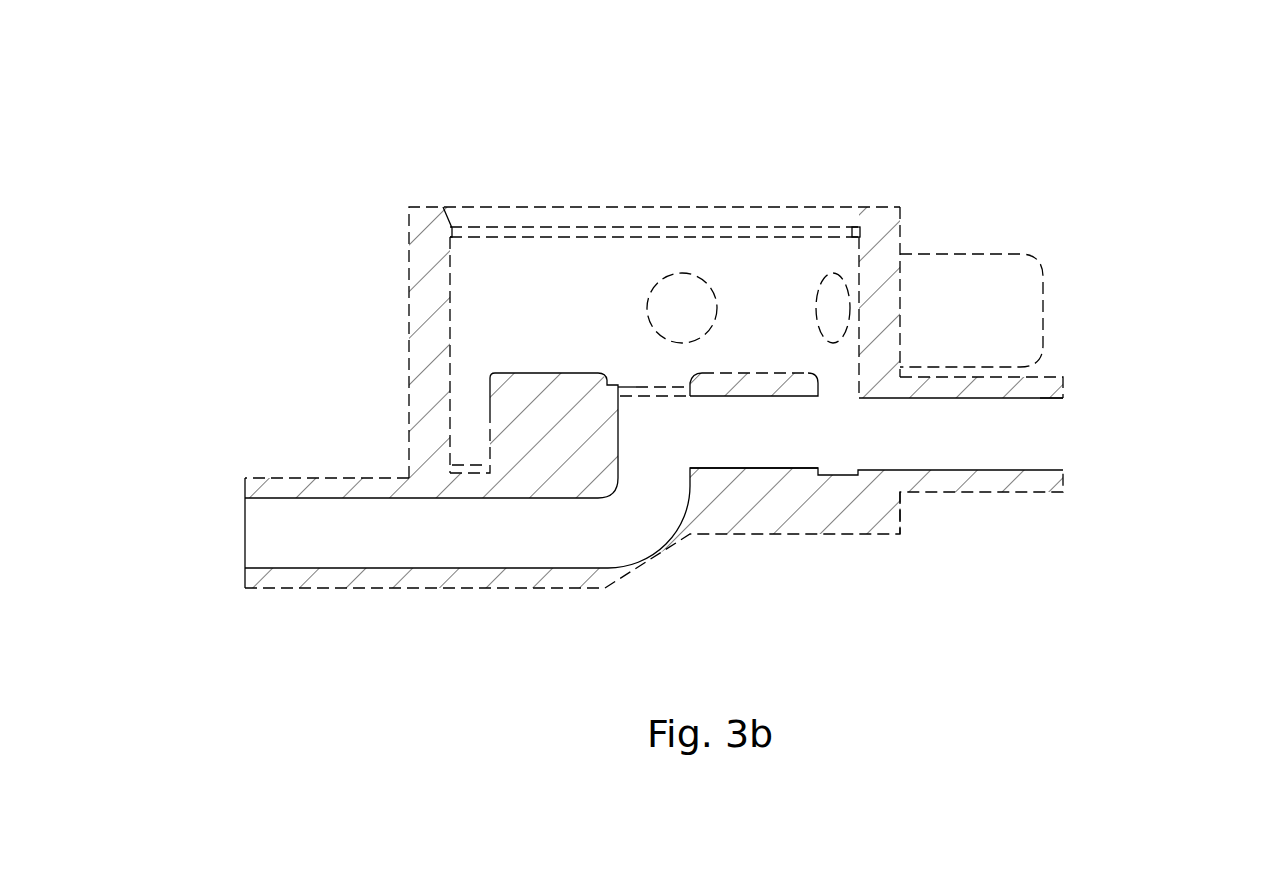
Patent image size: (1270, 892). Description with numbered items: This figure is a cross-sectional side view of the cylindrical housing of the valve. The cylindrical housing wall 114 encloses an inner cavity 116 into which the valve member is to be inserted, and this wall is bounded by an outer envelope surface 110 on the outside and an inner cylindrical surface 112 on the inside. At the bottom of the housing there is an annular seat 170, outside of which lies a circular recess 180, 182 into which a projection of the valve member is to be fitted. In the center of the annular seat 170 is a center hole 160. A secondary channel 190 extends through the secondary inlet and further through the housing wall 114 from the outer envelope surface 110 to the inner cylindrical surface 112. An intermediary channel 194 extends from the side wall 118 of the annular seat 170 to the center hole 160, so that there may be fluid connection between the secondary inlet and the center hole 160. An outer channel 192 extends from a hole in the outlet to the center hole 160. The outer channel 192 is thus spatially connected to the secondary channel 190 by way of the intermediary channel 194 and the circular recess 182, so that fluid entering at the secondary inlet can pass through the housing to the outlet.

The outer envelope surface 110 is at (383, 310).
The inner cylindrical surface 112 is at (425, 265).
The cylindrical housing wall 114 is at (895, 243).
The inner cavity 116 is at (576, 267).
The side wall 118 is at (466, 439).
The center hole 160 is at (634, 361).
The annular seat 170 is at (522, 347).
The circular recess 180 is at (472, 370).
The circular recess 182 is at (836, 401).
The secondary channel 190 is at (1056, 432).
The outer channel 192 is at (285, 514).
The intermediary channel 194 is at (778, 458).